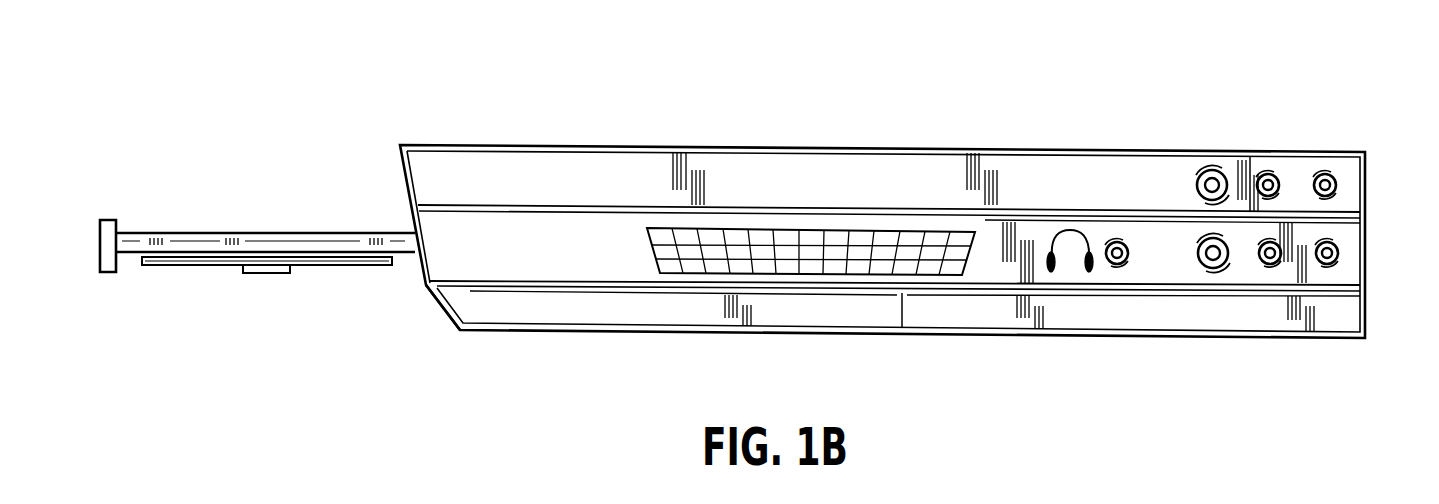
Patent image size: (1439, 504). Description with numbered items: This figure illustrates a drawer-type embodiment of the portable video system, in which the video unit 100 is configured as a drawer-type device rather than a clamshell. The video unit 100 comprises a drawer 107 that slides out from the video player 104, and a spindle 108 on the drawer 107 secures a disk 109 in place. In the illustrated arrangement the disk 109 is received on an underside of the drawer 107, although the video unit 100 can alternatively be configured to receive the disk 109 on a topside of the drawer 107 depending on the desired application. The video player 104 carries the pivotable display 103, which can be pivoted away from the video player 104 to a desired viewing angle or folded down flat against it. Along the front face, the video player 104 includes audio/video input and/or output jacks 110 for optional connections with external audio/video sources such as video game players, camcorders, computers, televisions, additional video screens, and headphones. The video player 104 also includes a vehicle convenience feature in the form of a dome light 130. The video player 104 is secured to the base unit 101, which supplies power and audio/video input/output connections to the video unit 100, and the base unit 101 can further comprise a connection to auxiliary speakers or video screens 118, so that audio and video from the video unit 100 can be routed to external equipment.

The video unit 100 is at (523, 377).
The base unit 101 is at (443, 145).
The pivotable display 103 is at (1327, 323).
The video player 104 is at (447, 313).
The drawer 107 is at (100, 272).
The spindle 108 is at (268, 275).
The disk 109 is at (183, 265).
The audio/video input and/or output jacks 110 is at (1338, 278).
The connection to auxiliary speakers or video screens 118 is at (1245, 162).
The dome light 130 is at (788, 276).